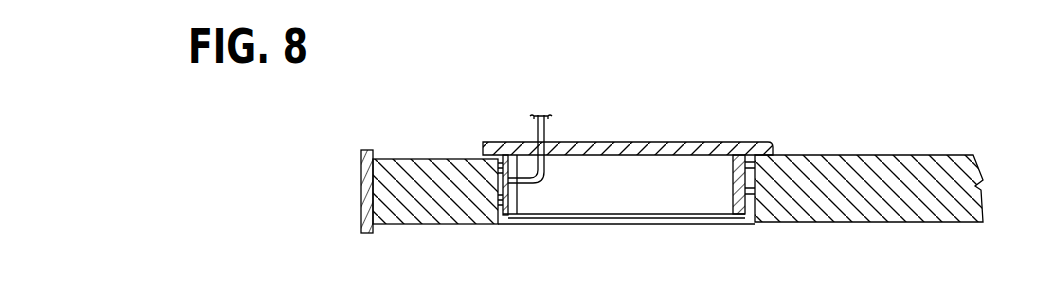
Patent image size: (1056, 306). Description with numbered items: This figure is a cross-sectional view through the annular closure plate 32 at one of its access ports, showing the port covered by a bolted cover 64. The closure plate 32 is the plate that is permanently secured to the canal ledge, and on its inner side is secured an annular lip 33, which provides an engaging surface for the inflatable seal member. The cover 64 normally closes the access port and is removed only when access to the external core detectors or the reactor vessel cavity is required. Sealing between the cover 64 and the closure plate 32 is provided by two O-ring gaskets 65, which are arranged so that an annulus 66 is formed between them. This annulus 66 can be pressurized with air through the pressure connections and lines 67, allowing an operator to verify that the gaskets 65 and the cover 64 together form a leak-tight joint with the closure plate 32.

The closure plate 32 is at (852, 155).
The annular lip 33 is at (361, 173).
The cover 64 is at (678, 143).
The O-ring gasket 65 is at (500, 170).
The annulus 66 is at (497, 205).
The pressure connection and line 67 is at (545, 128).